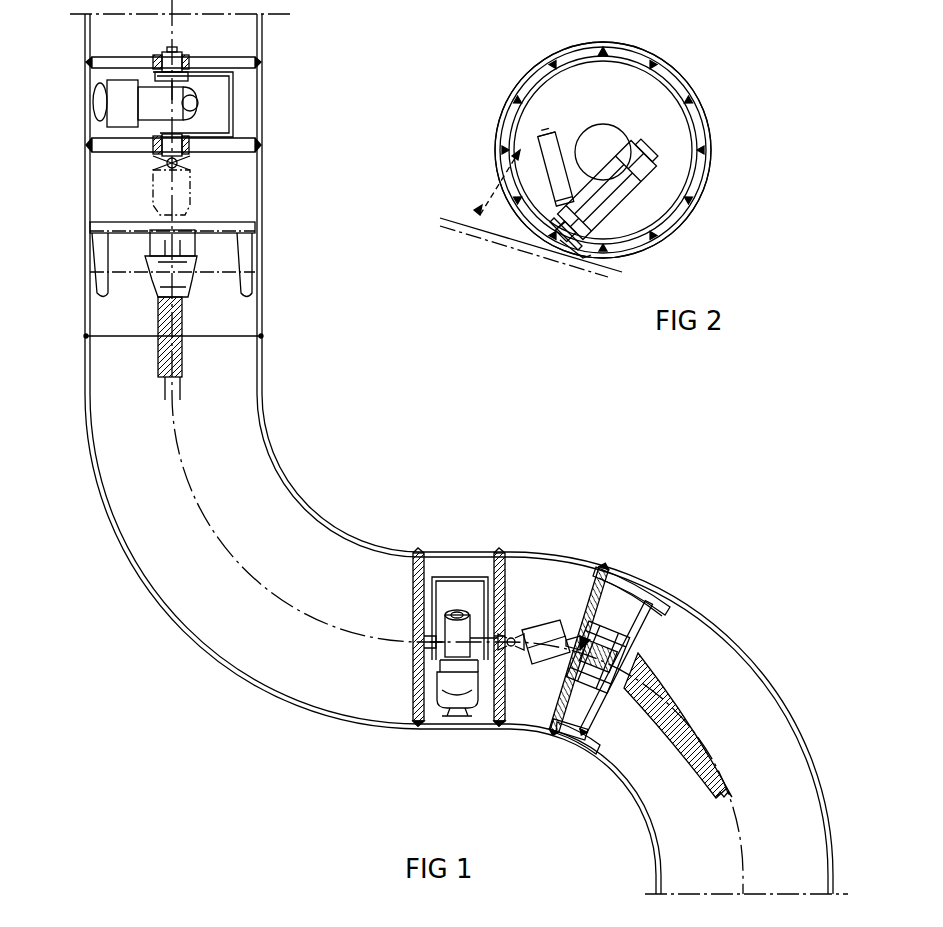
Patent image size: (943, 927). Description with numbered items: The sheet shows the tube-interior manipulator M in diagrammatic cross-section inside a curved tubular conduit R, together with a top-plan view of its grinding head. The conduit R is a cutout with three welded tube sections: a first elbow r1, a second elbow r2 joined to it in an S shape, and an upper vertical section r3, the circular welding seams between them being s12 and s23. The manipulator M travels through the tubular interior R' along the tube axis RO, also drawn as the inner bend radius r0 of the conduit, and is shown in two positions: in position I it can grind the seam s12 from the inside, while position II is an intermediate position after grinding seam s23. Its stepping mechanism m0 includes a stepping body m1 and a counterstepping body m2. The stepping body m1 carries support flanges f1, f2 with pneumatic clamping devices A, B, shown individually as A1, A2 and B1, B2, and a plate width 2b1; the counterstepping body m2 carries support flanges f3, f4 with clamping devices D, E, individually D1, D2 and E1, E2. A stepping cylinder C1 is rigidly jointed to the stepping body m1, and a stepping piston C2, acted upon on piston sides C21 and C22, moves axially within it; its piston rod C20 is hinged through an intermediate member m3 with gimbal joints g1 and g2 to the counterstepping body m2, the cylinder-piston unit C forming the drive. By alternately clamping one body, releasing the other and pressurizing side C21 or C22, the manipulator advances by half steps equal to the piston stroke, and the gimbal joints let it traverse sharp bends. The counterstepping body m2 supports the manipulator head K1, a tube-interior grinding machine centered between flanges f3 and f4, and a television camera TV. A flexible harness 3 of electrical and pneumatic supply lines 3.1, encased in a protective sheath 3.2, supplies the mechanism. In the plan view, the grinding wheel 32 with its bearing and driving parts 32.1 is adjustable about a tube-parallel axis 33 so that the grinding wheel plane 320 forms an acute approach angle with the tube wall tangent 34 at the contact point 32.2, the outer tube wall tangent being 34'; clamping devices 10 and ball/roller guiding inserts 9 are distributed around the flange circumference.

In FIG. 1, the circular welding seam s23 is at (262, 336).
In FIG. 1, the intermediate position II is at (194, 223).
In FIG. 1, the tube-interior manipulator M is at (118, 193).
In FIG. 1, the upper tube section r3 is at (262, 268).
In FIG. 1, the tube axis r0 is at (262, 452).
In FIG. 1, the tubular conduit R is at (326, 477).
In FIG. 1, the second tube elbow r2 is at (345, 540).
In FIG. 1, the tubular interior R' is at (233, 546).
In FIG. 1, the tube axis RO is at (290, 598).
In FIG. 1, the clamping device D is at (520, 517).
In FIG. 1, the clamping device D1 is at (418, 550).
In FIG. 1, the circular welding seam s12 is at (458, 552).
In FIG. 1, the counterstepping body m2 is at (498, 552).
In FIG. 1, the clamping device D2 is at (505, 550).
In FIG. 1, the operating position I is at (583, 487).
In FIG. 1, the stepping mechanism m0 is at (560, 552).
In FIG. 1, the clamping device A is at (695, 540).
In FIG. 1, the clamping device A1 is at (605, 575).
In FIG. 1, the plate width 2b1 is at (630, 590).
In FIG. 1, the stepping body m1 is at (668, 598).
In FIG. 1, the clamping device A2 is at (692, 575).
In FIG. 1, the first tube elbow r1 is at (775, 690).
In FIG. 1, the support flange f3 is at (413, 588).
In FIG. 1, the support flange f4 is at (505, 578).
In FIG. 1, the clamping device E1 is at (416, 728).
In FIG. 1, the clamping device E2 is at (500, 728).
In FIG. 1, the clamping device E is at (492, 772).
In FIG. 1, the television camera TV is at (475, 602).
In FIG. 2, the television camera TV is at (548, 135).
In FIG. 1, the manipulator head K1 is at (440, 665).
In FIG. 1, the grinding wheel 32 is at (452, 726).
In FIG. 2, the grinding wheel 32 is at (556, 250).
In FIG. 1, the second gimbal joint g2 is at (515, 632).
In FIG. 1, the intermediate member m3 is at (540, 666).
In FIG. 1, the first gimbal joint g1 is at (578, 632).
In FIG. 1, the support flange f1 is at (548, 706).
In FIG. 1, the support flange f2 is at (650, 612).
In FIG. 1, the clamping device B1 is at (552, 738).
In FIG. 1, the clamping device B2 is at (600, 752).
In FIG. 1, the clamping device B is at (595, 785).
In FIG. 1, the carriage C is at (632, 648).
In FIG. 1, the stepping cylinder C1 is at (612, 612).
In FIG. 1, the piston side C22 is at (640, 660).
In FIG. 1, the piston side C21 is at (640, 676).
In FIG. 1, the stepping piston C2 is at (590, 690).
In FIG. 1, the piston rod C20 is at (582, 718).
In FIG. 1, the flexible harness 3 is at (712, 760).
In FIG. 1, the protective sheath 3.2 is at (722, 782).
In FIG. 1, the electrical and pneumatic supply lines 3.1 is at (728, 800).
In FIG. 2, the clamping device 10 is at (603, 47).
In FIG. 2, the ball/roller insert 9 is at (655, 62).
In FIG. 2, the tube parallel axis 33 is at (628, 183).
In FIG. 2, the bearing and driving parts 32.1 is at (608, 205).
In FIG. 2, the grinding wheel contact point 32.2 is at (590, 262).
In FIG. 2, the tube wall tangent 34 is at (531, 230).
In FIG. 2, the outer tube wall tangent 34' is at (524, 251).
In FIG. 2, the grinding wheel plane 320 is at (497, 160).